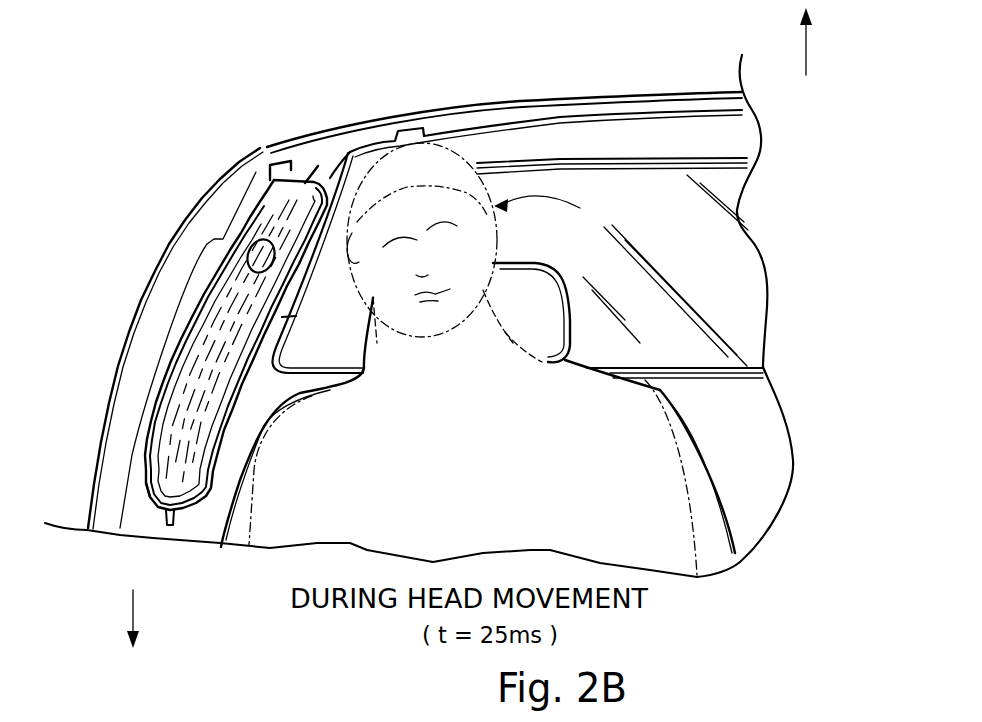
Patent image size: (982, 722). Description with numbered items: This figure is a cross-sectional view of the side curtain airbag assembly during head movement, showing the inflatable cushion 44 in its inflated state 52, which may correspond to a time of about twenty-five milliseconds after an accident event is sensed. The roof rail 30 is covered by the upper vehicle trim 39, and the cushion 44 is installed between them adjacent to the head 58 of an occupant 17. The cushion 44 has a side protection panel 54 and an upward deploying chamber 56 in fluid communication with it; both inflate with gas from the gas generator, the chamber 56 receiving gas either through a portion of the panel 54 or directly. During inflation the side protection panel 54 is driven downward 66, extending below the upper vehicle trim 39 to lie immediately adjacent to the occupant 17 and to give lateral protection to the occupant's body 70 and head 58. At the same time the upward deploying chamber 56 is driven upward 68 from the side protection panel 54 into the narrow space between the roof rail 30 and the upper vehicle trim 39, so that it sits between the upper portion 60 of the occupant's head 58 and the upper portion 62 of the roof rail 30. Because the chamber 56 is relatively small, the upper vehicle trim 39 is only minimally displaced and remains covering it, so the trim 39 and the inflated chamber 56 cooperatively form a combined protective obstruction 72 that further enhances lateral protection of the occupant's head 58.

The occupant 17 is at (484, 514).
The roof rail 30 is at (220, 236).
The upper vehicle trim 39 is at (520, 122).
The inflatable cushion 44 is at (232, 283).
The inflated state 52 is at (190, 413).
The side protection panel 54 is at (167, 488).
The upward deploying chamber 56 is at (290, 193).
The head 58 is at (426, 223).
The upper portion of the occupant's head 60 is at (423, 170).
The upper portion of the roof rail 62 is at (266, 143).
The downward direction 66 is at (137, 604).
The upward direction 68 is at (811, 59).
The occupant's body 70 is at (384, 514).
The combined upper vehicle trim-upward deploying chamber protective obstruction 72 is at (330, 178).